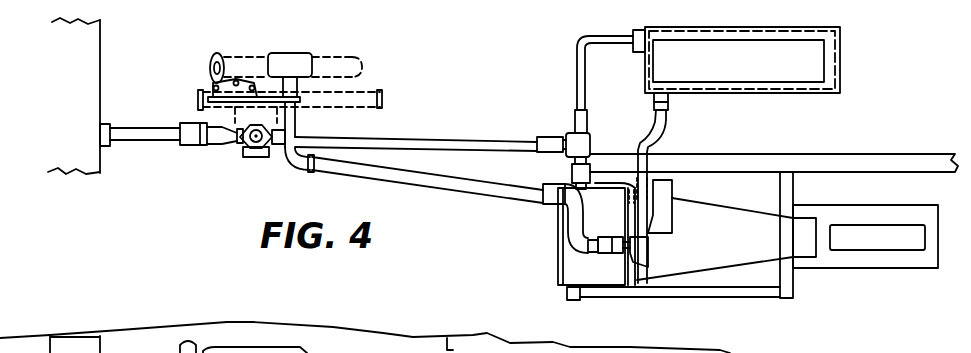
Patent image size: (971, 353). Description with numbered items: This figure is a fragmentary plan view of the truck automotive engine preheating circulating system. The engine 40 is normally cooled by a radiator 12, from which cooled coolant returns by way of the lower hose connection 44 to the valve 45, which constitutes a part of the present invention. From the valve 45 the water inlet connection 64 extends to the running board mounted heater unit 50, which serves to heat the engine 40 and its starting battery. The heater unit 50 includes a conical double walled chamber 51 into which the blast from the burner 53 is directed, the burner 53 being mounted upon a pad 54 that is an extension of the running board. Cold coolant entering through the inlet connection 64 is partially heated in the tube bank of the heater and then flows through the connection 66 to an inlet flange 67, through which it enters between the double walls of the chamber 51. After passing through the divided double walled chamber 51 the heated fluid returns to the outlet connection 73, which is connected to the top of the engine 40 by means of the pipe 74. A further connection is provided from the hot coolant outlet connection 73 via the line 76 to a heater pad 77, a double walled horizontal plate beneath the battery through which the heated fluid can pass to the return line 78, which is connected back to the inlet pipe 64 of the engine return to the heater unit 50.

The radiator 12 is at (88, 42).
The engine 40 is at (183, 80).
The lower hose connection 44 is at (138, 133).
The valve 45 is at (250, 155).
The water inlet connection 64 is at (481, 140).
The pipe 74 is at (445, 183).
The return line 78 is at (607, 37).
The heater pad 77 is at (793, 88).
The line 76 is at (663, 127).
The connection 66 is at (650, 185).
The inlet flange 67 is at (672, 185).
The conical double walled chamber 51 is at (730, 218).
The outlet connection 73 is at (649, 252).
The heater unit 50 is at (738, 246).
The burner 53 is at (883, 250).
The pad 54 is at (932, 268).